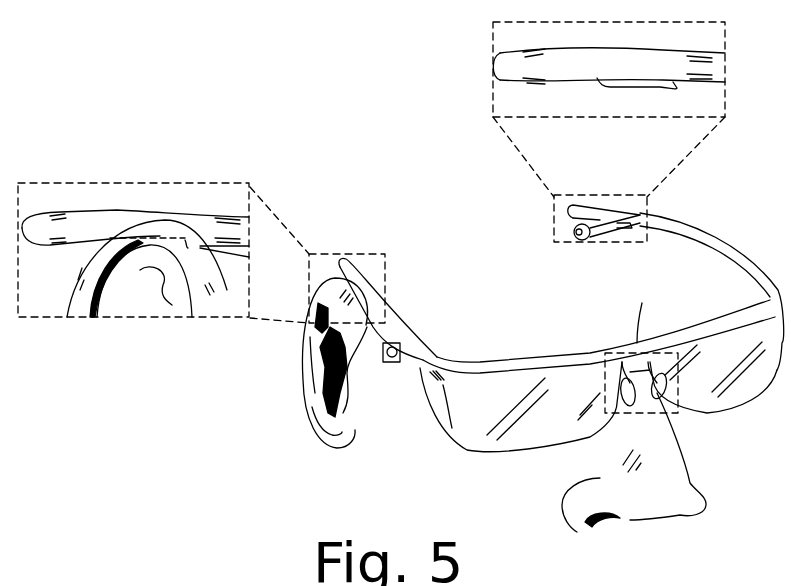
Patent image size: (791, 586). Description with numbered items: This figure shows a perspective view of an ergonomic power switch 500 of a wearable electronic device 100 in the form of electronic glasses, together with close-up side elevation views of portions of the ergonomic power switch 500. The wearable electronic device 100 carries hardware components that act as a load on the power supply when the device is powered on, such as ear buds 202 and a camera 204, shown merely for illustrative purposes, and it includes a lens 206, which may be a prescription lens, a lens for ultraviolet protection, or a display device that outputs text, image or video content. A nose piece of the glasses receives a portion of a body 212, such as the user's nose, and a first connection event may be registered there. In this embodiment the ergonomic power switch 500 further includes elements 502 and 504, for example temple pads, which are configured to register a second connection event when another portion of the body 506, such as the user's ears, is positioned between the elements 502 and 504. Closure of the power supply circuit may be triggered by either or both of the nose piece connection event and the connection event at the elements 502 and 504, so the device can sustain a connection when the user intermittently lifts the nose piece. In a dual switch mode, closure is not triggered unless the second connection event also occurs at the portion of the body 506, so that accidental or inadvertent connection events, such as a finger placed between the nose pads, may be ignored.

The wearable electronic device 100 is at (693, 203).
The ear buds 202 is at (577, 233).
The camera 204 is at (397, 363).
The lens 206 is at (507, 383).
The portion of a body 212 is at (587, 497).
The ergonomic power switch 500 is at (603, 350).
The element 502 is at (163, 240).
The element 504 is at (620, 83).
The portion of the body 506 is at (143, 290).